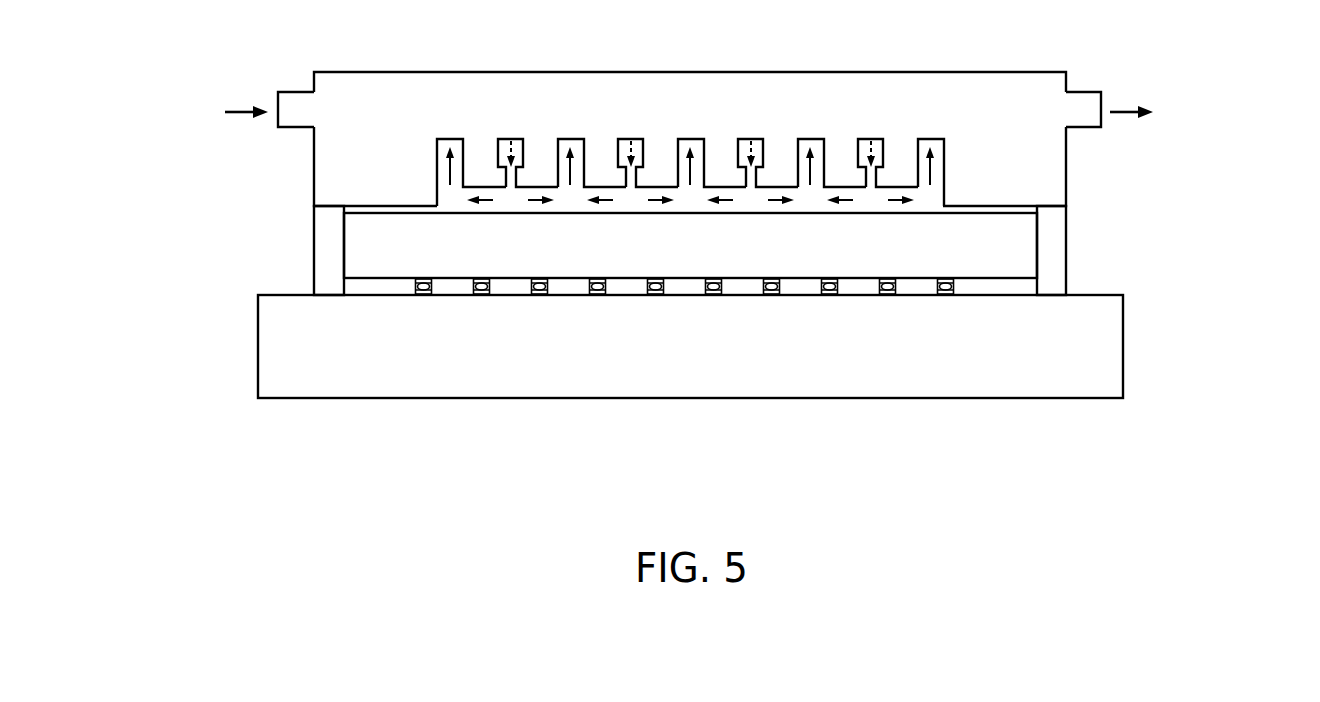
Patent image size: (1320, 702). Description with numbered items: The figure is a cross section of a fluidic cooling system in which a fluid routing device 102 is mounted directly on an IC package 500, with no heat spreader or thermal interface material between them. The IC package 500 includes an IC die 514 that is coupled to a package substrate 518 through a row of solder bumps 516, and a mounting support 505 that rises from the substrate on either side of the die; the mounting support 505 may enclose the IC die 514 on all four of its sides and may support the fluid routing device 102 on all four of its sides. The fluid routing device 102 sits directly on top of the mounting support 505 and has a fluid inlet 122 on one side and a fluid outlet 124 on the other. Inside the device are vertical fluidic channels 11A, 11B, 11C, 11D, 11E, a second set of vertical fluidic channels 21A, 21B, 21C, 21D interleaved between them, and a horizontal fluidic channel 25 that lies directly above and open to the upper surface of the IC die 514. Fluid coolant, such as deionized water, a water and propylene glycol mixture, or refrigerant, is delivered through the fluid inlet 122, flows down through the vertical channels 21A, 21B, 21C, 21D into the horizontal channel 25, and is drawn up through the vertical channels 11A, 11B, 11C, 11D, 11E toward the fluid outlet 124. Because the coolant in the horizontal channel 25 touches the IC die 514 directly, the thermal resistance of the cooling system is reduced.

The IC package 500 is at (194, 238).
The fluid routing device 102 is at (913, 70).
The fluid inlet 122 is at (300, 90).
The fluid outlet 124 is at (1082, 92).
The vertical fluidic channel 11A is at (450, 138).
The vertical fluidic channel 11B is at (570, 138).
The vertical fluidic channel 11C is at (690, 138).
The vertical fluidic channel 11D is at (810, 138).
The vertical fluidic channel 11E is at (930, 138).
The vertical fluidic channel 21A is at (509, 138).
The vertical fluidic channel 21B is at (629, 138).
The vertical fluidic channel 21C is at (749, 138).
The vertical fluidic channel 21D is at (869, 138).
The horizontal fluidic channel 25 is at (812, 205).
The mounting support 505 is at (314, 232).
The IC die 514 is at (978, 263).
The solder bumps 516 is at (398, 283).
The package substrate 518 is at (1027, 398).